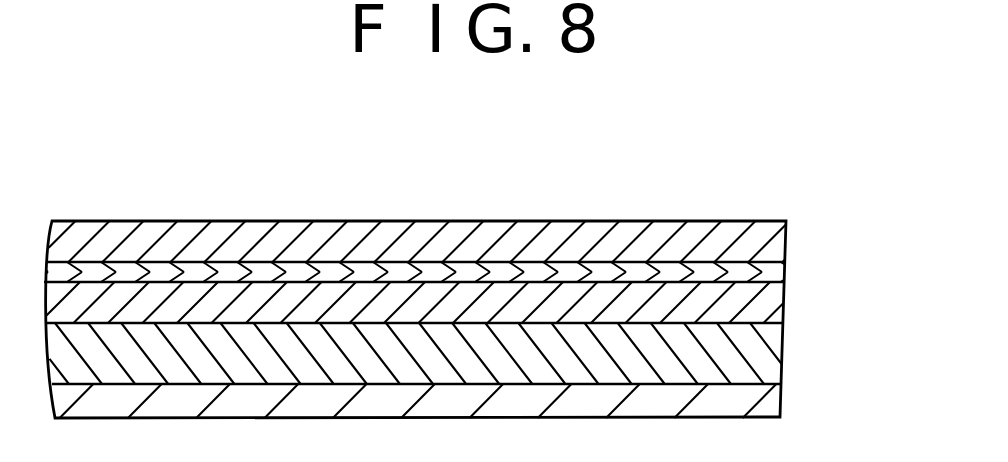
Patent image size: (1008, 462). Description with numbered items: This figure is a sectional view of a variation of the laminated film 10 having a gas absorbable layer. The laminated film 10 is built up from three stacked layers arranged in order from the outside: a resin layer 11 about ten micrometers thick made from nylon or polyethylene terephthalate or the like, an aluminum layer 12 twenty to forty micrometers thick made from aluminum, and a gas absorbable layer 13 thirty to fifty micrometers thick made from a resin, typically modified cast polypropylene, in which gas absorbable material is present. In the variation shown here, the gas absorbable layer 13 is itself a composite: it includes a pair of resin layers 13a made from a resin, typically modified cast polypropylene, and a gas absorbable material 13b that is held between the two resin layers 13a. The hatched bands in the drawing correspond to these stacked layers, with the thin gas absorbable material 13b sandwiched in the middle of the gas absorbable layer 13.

The laminated film 10 is at (479, 277).
The resin layer 11 is at (771, 404).
The aluminum layer 12 is at (771, 356).
The gas absorbable layer 13 is at (479, 270).
The resin layers 13a is at (765, 243).
The gas absorbable material 13b is at (766, 272).